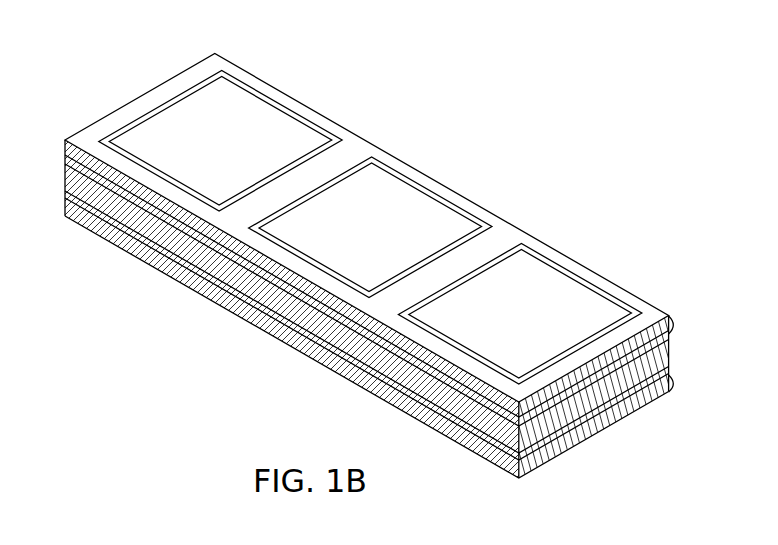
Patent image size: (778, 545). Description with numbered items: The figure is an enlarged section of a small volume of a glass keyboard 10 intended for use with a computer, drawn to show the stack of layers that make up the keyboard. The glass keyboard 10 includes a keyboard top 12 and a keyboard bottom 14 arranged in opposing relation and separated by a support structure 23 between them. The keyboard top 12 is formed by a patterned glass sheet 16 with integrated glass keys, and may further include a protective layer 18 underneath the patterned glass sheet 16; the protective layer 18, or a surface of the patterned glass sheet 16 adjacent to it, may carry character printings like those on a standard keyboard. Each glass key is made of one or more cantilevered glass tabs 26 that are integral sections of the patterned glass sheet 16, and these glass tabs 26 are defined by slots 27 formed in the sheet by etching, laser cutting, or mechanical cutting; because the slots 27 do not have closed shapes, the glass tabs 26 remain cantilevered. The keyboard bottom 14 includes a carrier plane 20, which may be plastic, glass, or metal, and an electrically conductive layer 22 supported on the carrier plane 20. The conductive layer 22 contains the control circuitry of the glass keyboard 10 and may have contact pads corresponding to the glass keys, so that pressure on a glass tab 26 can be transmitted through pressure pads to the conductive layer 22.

The glass keyboard 10 is at (387, 126).
The keyboard top 12 is at (677, 326).
The keyboard bottom 14 is at (677, 381).
The patterned glass sheet 16 is at (553, 260).
The protective layer 18 is at (75, 162).
The carrier plane 20 is at (263, 318).
The electrically conductive layer 22 is at (330, 353).
The support structure 23 is at (660, 356).
The cantilevered glass tab 26 is at (142, 138).
The slot 27 is at (173, 97).